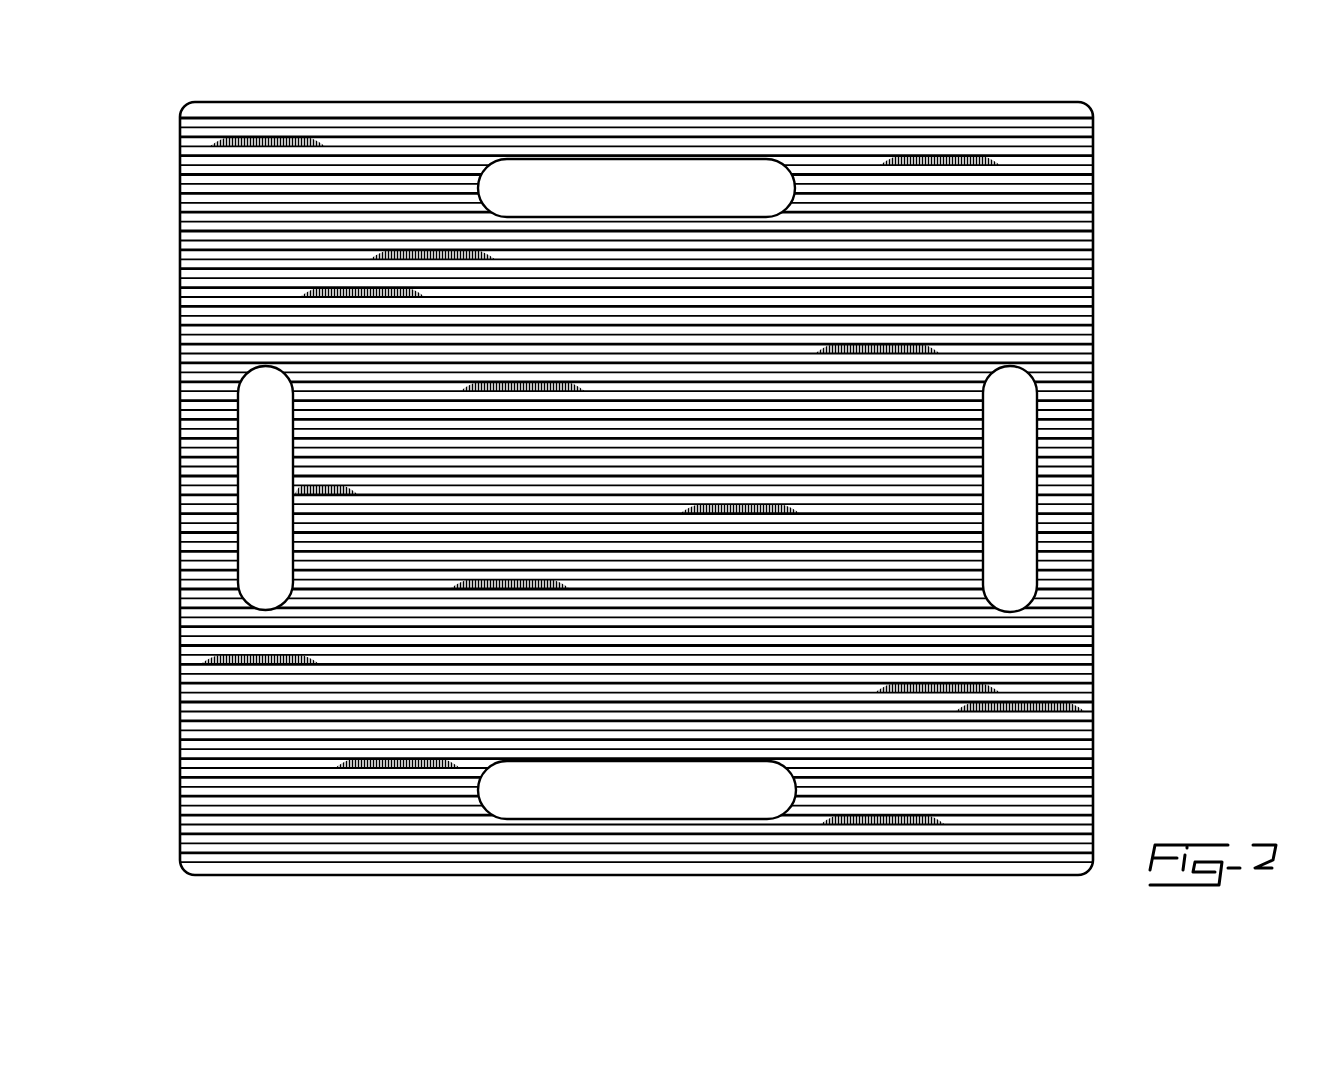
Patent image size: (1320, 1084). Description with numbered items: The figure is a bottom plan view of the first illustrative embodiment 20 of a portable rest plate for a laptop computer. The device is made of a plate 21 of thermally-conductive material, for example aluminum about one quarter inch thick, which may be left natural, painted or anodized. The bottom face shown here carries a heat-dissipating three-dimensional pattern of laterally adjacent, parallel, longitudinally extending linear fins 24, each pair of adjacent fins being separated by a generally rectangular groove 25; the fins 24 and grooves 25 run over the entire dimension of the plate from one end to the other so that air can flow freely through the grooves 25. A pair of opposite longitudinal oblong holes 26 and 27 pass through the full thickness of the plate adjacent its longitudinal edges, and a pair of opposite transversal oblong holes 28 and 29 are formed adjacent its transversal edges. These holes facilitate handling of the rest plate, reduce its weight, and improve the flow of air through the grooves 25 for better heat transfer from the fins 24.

The first illustrative embodiment 20 is at (699, 487).
The plate 21 is at (180, 680).
The linear fins 24 is at (1087, 443).
The groove 25 is at (1087, 336).
The longitudinal oblong hole 26 is at (720, 172).
The longitudinal oblong hole 27 is at (730, 798).
The transversal oblong hole 28 is at (1017, 548).
The transversal oblong hole 29 is at (262, 537).